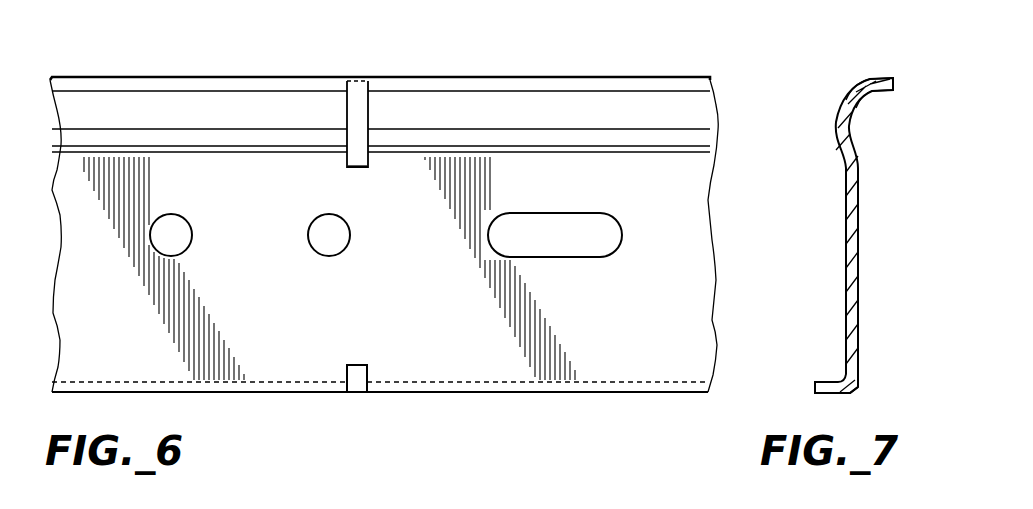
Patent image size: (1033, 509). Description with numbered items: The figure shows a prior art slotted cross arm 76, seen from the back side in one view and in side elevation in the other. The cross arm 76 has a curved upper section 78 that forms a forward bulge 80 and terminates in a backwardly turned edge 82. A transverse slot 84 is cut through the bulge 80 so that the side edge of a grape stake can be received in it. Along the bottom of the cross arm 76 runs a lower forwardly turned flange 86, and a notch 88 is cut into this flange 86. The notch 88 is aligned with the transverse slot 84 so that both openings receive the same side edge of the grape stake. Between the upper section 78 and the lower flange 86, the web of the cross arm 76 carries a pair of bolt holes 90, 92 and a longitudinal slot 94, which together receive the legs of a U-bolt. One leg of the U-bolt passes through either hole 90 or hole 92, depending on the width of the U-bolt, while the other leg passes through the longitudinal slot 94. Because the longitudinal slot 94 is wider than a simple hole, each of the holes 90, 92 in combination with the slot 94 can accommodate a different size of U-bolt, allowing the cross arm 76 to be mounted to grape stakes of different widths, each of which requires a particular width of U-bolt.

In FIG. 6, the slotted cross arm 76 is at (648, 66).
In FIG. 7, the slotted cross arm 76 is at (866, 52).
In FIG. 6, the curved upper section 78 is at (526, 106).
In FIG. 7, the curved upper section 78 is at (856, 92).
In FIG. 6, the forward bulge 80 is at (232, 95).
In FIG. 7, the forward bulge 80 is at (837, 117).
In FIG. 6, the backwardly turned edge 82 is at (390, 88).
In FIG. 6, the transverse slot 84 is at (367, 142).
In FIG. 6, the lower forwardly turned flange 86 is at (595, 382).
In FIG. 7, the lower forwardly turned flange 86 is at (830, 382).
In FIG. 6, the notch 88 is at (362, 378).
In FIG. 6, the bolt hole 90 is at (167, 253).
In FIG. 6, the bolt hole 92 is at (325, 253).
In FIG. 6, the longitudinal slot 94 is at (603, 254).